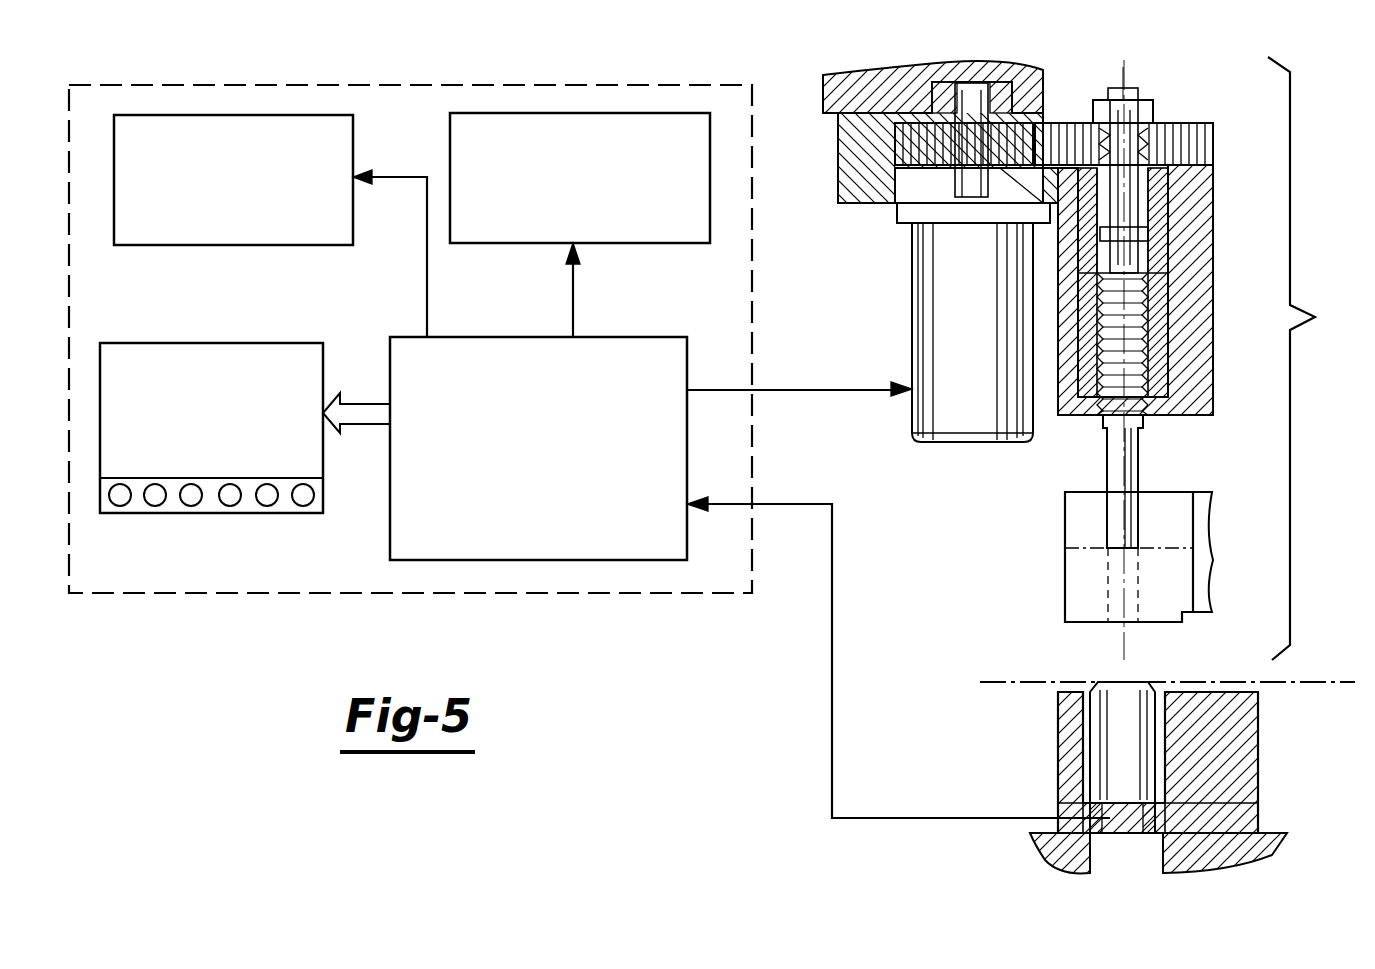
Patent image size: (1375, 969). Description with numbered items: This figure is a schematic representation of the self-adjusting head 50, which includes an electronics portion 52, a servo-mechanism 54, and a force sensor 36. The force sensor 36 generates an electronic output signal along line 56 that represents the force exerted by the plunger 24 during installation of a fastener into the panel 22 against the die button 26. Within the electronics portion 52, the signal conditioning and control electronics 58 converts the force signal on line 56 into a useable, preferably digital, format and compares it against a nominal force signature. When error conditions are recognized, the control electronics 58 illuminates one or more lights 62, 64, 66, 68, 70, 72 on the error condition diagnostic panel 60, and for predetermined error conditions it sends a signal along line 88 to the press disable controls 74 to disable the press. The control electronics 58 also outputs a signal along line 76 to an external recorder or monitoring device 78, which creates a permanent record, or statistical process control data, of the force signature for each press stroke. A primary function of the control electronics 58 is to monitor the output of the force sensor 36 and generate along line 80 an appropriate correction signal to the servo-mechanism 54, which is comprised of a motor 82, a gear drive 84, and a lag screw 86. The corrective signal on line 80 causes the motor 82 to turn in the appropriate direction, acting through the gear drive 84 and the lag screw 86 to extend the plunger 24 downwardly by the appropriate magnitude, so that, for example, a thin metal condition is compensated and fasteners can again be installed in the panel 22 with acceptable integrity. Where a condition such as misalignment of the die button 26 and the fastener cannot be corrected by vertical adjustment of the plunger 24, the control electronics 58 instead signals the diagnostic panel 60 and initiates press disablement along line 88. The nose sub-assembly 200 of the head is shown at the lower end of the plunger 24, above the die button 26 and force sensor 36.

The panel 22 is at (1255, 683).
The plunger 24 is at (1118, 476).
The die button 26 is at (1085, 735).
The force sensor 36 is at (1103, 813).
The self-adjusting head 50 is at (783, 92).
The electronics portion 52 is at (682, 597).
The servo-mechanism 54 is at (1314, 358).
The line 56 is at (834, 647).
The signal conditioning and control electronics 58 is at (481, 305).
The error condition diagnostic panel 60 is at (190, 342).
The light 62 is at (120, 508).
The light 64 is at (155, 508).
The light 66 is at (191, 508).
The light 68 is at (230, 508).
The light 70 is at (267, 508).
The light 72 is at (303, 508).
The press disable controls 74 is at (307, 246).
The line 76 is at (572, 290).
The external recorder or monitoring device 78 is at (690, 245).
The line 80 is at (807, 388).
The motor 82 is at (980, 318).
The gear drive 84 is at (1040, 121).
The lag screw 86 is at (1172, 337).
The line 88 is at (427, 285).
The nose sub-assembly 200 is at (1065, 597).